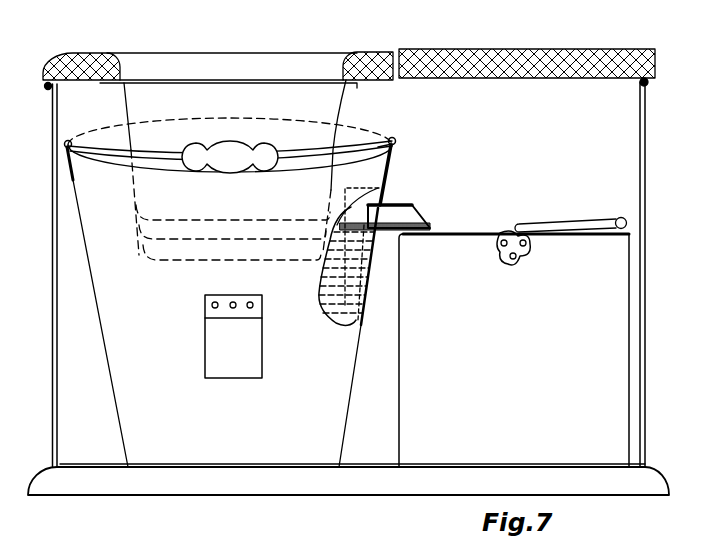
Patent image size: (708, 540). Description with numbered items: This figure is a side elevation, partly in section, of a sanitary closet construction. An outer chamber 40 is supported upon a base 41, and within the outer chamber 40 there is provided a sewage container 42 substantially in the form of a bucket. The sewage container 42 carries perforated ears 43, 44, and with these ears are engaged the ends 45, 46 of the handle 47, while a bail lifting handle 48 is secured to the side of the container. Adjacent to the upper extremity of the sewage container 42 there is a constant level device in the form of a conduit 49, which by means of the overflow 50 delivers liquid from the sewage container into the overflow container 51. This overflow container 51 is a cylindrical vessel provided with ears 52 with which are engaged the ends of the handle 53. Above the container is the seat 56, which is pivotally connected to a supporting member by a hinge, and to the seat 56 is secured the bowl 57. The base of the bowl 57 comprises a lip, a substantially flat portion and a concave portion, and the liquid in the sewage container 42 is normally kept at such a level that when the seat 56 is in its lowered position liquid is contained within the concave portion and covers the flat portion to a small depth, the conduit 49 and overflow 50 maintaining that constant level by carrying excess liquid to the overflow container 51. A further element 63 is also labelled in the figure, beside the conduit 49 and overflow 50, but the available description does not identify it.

The outer chamber 40 is at (641, 135).
The base 41 is at (649, 462).
The sewage container 42 is at (113, 333).
The perforated ear 43 is at (394, 133).
The perforated ear 44 is at (68, 140).
The handle end 45 is at (396, 144).
The handle end 46 is at (98, 148).
The handle 47 is at (230, 150).
The bail lifting handle 48 is at (250, 373).
The conduit 49 is at (377, 195).
The overflow 50 is at (413, 212).
The overflow container 51 is at (614, 345).
The ears 52 is at (516, 236).
The handle 53 is at (582, 222).
The seat 56 is at (379, 62).
The bowl 57 is at (329, 100).
The insulating pad 63 is at (346, 307).